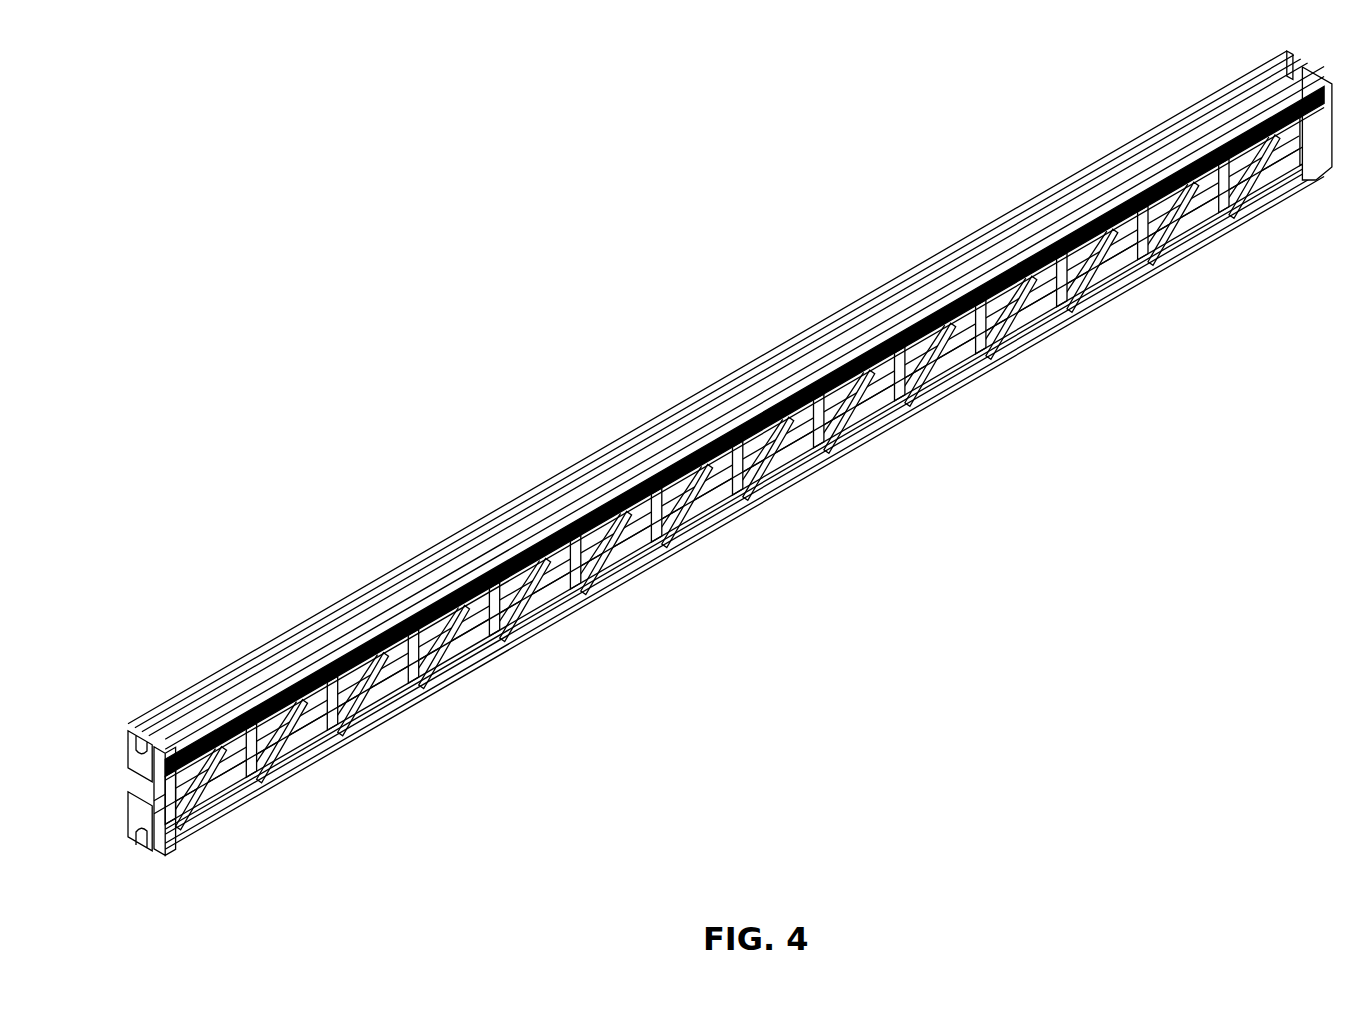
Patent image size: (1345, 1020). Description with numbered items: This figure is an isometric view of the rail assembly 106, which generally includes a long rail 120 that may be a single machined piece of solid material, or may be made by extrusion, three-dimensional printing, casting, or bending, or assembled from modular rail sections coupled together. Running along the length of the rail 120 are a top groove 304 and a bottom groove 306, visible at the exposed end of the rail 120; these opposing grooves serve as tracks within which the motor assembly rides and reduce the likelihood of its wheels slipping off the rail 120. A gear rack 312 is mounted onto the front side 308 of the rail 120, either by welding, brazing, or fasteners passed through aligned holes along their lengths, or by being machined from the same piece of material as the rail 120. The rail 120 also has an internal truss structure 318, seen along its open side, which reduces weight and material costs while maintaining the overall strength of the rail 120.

The rail assembly 106 is at (717, 471).
The rail 120 is at (766, 360).
The top groove 304 is at (149, 750).
The bottom groove 306 is at (146, 831).
The front side 308 is at (743, 461).
The gear rack 312 is at (655, 505).
The internal truss structure 318 is at (940, 350).